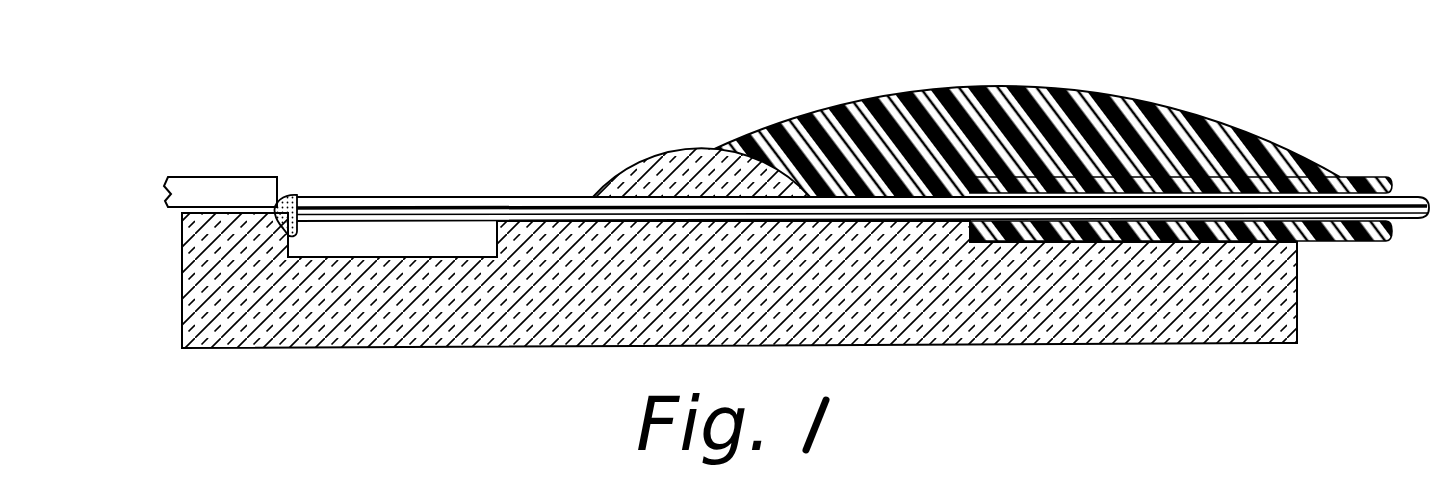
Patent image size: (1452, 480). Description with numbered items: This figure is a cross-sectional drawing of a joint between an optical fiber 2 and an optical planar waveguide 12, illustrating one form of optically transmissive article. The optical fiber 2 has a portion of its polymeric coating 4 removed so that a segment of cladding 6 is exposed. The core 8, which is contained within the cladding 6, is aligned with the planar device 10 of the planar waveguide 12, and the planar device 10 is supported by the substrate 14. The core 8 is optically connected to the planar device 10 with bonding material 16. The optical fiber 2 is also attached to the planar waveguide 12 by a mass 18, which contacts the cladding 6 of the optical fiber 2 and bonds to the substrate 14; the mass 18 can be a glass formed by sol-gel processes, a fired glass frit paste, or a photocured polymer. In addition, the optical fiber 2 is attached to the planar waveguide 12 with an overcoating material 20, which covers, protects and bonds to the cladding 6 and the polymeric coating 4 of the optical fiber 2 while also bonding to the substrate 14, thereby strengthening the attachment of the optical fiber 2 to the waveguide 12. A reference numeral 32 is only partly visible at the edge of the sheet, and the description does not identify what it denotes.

The optical fiber 2 is at (872, 173).
The polymeric coating 4 is at (1344, 242).
The cladding 6 is at (1407, 193).
The core 8 is at (1429, 214).
The planar device 10 is at (234, 207).
The planar waveguide 12 is at (730, 286).
The substrate 14 is at (558, 350).
The bonding material 16 is at (285, 197).
The mass 18 is at (683, 147).
The overcoating material 20 is at (1148, 102).
The reference numeral of adjacent figure 32 is at (961, 467).